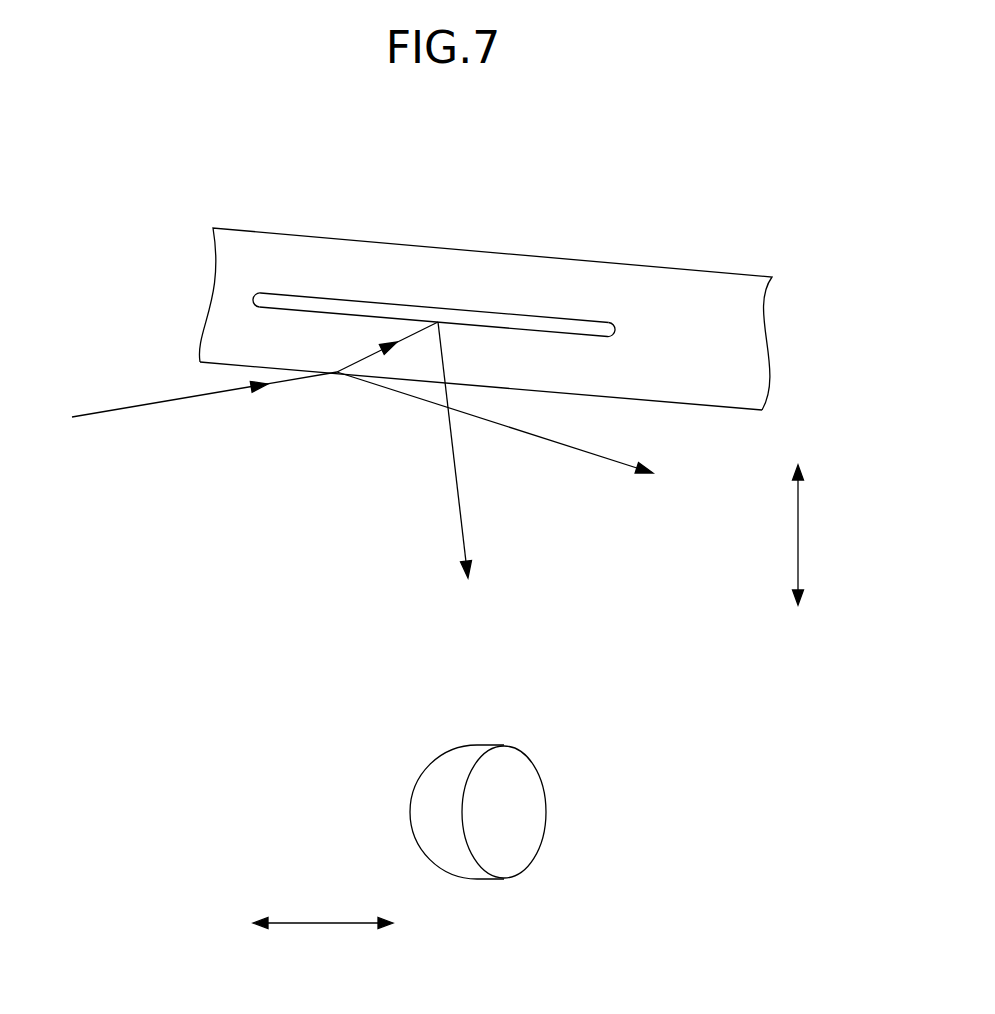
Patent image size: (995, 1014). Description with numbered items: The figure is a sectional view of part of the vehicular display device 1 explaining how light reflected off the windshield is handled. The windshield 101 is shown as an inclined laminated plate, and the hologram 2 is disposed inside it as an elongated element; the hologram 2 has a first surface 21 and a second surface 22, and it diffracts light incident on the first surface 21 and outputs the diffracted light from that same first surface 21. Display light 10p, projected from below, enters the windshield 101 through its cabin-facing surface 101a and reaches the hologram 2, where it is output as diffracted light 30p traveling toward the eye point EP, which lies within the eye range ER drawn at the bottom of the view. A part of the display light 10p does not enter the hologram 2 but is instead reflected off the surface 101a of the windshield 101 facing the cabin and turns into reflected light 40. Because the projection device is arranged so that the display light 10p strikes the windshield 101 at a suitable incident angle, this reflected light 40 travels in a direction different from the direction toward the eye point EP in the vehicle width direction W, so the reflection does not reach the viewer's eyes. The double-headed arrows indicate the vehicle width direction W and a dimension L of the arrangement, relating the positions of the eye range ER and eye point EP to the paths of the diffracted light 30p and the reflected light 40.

The vehicular display device 1 is at (380, 182).
The windshield 101 is at (741, 258).
The surface of the windshield facing the cabin 101a is at (722, 409).
The hologram 2 is at (434, 320).
The second surface 22 is at (582, 317).
The first surface 21 is at (579, 334).
The display light 10p is at (122, 407).
The reflected light 40 is at (591, 455).
The diffracted light 30p is at (460, 503).
The length dimension L is at (810, 535).
The vehicle width direction W is at (323, 910).
The eye range ER is at (433, 863).
The eye point EP is at (472, 855).